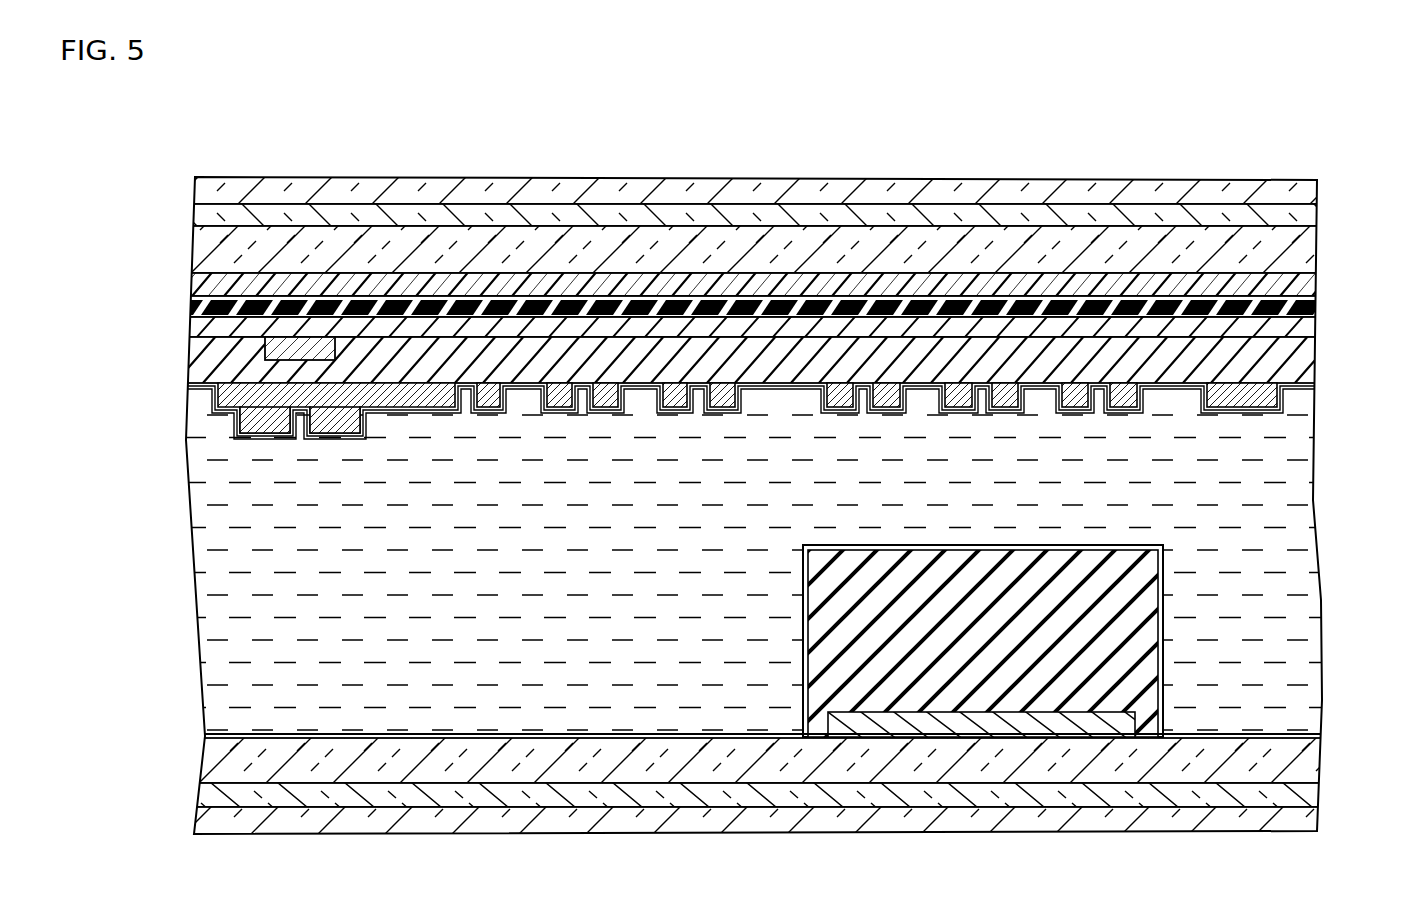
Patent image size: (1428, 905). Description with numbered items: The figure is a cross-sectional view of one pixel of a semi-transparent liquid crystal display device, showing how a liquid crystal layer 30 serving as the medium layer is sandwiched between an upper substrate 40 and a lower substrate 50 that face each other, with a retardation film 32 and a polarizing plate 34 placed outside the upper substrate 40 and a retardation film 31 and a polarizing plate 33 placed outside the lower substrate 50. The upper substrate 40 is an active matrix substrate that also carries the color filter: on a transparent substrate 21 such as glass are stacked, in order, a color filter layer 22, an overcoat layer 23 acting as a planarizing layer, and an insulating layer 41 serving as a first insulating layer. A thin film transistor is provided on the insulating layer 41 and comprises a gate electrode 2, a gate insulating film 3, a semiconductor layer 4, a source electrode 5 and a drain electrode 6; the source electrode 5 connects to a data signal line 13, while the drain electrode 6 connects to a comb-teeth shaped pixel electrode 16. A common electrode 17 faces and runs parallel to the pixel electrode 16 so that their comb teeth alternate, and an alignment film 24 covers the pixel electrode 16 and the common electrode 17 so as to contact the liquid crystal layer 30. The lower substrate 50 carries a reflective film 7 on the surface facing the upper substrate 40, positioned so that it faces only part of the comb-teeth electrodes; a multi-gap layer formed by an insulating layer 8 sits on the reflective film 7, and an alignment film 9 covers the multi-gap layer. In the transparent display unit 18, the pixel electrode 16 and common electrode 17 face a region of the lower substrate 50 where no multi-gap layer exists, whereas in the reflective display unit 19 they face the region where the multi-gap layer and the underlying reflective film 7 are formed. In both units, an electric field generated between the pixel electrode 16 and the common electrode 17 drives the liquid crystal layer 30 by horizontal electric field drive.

The gate electrode 2 is at (197, 352).
The gate insulating film 3 is at (197, 378).
The semiconductor layer 4 is at (222, 399).
The source electrode 5 is at (266, 437).
The drain electrode 6 is at (337, 437).
The reflective film 7 is at (1122, 712).
The insulating layer 8 is at (1160, 631).
The alignment film 9 is at (1160, 595).
The data signal line 13 is at (1257, 400).
The pixel electrode 16 is at (446, 410).
The common electrode 17 is at (496, 410).
The transparent display unit 18 is at (797, 167).
The reflective display unit 19 is at (1163, 167).
The transparent substrate 21 is at (193, 243).
The color filter layer 22 is at (190, 285).
The overcoat layer 23 is at (190, 310).
The alignment film 24 is at (238, 428).
The liquid crystal layer 30 is at (1303, 467).
The retardation film 31 is at (1313, 793).
The retardation film 32 is at (1318, 213).
The polarizing plate 33 is at (1313, 818).
The polarizing plate 34 is at (1318, 185).
The upper substrate 40 is at (751, 304).
The insulating layer 41 is at (190, 327).
The lower substrate 50 is at (1343, 738).